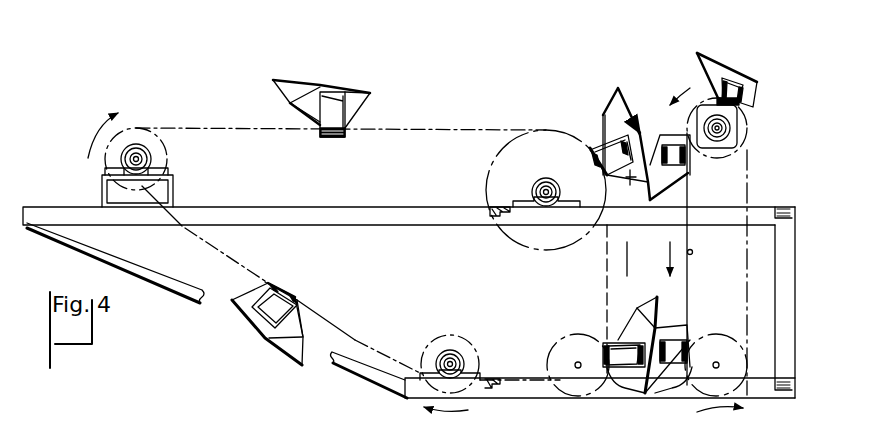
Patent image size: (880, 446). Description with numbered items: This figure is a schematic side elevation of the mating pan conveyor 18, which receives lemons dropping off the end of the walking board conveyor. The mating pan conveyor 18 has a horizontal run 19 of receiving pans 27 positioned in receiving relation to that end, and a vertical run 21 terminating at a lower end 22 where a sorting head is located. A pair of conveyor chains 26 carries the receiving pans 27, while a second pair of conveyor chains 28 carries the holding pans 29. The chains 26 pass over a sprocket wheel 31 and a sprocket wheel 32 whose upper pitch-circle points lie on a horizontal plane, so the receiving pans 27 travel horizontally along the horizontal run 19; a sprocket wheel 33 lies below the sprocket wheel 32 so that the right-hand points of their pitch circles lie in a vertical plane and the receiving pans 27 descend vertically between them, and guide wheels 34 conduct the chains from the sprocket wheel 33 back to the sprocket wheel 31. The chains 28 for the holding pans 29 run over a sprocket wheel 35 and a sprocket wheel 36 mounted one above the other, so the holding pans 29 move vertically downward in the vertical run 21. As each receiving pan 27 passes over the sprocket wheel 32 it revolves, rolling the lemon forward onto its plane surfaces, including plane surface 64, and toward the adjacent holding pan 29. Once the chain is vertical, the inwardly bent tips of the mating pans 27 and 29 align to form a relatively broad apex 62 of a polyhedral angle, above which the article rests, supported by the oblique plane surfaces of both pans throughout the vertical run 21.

The mating pan conveyor 18 is at (250, 340).
The horizontal run 19 is at (97, 110).
The vertical run 21 is at (658, 72).
The lower end 22 is at (656, 376).
The conveyor chains 26 is at (400, 129).
The receiving pans 27 is at (320, 82).
The conveyor chains 28 is at (752, 150).
The holding pans 29 is at (710, 55).
The sprocket wheel 31 is at (166, 155).
The sprocket wheel 32 is at (485, 172).
The sprocket wheel 33 is at (576, 336).
The guide wheels 34 is at (440, 335).
The sprocket wheel 35 is at (747, 121).
The sprocket wheel 36 is at (738, 373).
The broad apex 62 is at (648, 392).
The plane surface 64 is at (630, 172).